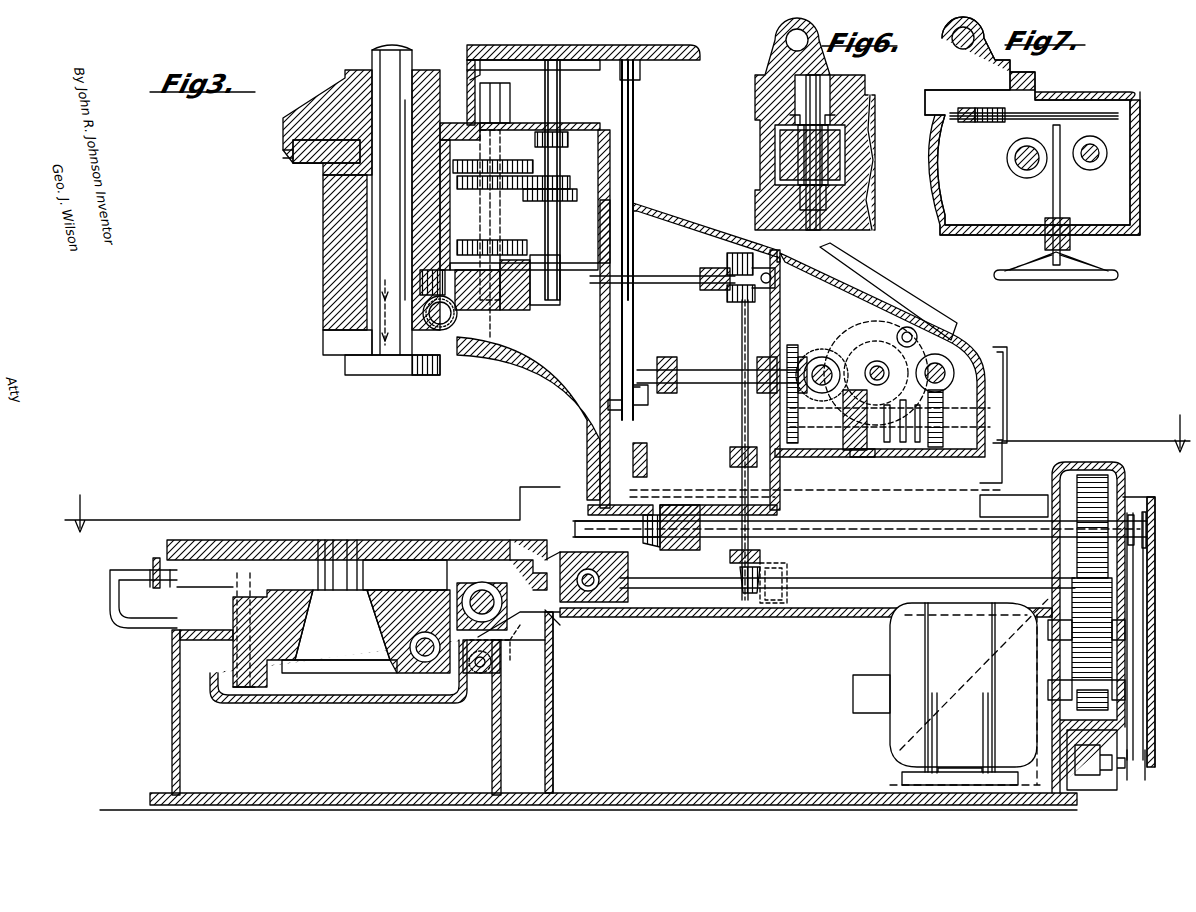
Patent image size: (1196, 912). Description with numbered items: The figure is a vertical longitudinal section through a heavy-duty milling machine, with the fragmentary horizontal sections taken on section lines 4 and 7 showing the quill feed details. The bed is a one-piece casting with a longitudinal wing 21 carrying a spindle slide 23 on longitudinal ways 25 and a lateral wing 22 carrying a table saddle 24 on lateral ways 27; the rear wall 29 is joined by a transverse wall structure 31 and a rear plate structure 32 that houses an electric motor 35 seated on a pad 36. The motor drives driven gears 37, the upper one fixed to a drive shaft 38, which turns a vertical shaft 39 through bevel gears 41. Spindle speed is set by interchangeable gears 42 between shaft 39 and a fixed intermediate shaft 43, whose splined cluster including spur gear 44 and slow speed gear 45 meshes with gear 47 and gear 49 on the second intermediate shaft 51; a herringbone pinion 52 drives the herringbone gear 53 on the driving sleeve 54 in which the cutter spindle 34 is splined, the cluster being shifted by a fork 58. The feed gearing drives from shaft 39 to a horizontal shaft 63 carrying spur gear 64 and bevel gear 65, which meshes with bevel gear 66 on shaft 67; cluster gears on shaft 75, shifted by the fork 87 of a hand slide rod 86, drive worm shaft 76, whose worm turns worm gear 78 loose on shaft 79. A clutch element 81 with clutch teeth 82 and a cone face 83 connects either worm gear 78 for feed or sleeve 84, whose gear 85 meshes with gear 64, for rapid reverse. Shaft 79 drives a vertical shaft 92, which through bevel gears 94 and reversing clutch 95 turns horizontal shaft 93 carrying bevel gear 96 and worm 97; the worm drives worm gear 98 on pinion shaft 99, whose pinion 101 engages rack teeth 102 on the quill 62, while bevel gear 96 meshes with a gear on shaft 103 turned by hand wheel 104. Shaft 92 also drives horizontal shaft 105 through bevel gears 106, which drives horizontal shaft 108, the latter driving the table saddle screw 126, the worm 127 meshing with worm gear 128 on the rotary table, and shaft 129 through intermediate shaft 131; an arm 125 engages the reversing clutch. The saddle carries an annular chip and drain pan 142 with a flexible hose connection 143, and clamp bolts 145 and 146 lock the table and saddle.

In FIG. 3, the section line 4- 4 is at (628, 473).
In FIG. 3, the section line 7- 7 is at (434, 311).
In FIG. 3, the longitudinal wing 21 is at (783, 805).
In FIG. 3, the lateral wing 22 is at (172, 718).
In FIG. 3, the spindle slide 23 is at (690, 215).
In FIG. 6, the spindle slide 23 is at (872, 228).
In FIG. 7, the spindle slide 23 is at (1110, 80).
In FIG. 3, the table saddle 24 is at (240, 664).
In FIG. 3, the longitudinal ways 25 is at (1013, 498).
In FIG. 3, the lateral ways 27 is at (495, 655).
In FIG. 3, the rear wall 29 is at (798, 700).
In FIG. 3, the transverse wall structure 31 is at (560, 624).
In FIG. 3, the rear plate structure 32 is at (1090, 455).
In FIG. 3, the cutter spindle 34 is at (400, 375).
In FIG. 3, the electric motor 35 is at (907, 650).
In FIG. 3, the pad 36 is at (900, 783).
In FIG. 3, the driven gears 37 is at (1110, 585).
In FIG. 3, the drive shaft 38 is at (1020, 545).
In FIG. 3, the vertical shaft 39 is at (651, 300).
In FIG. 3, the bevel gears 41 is at (618, 522).
In FIG. 3, the interchangeable gears 42 is at (590, 70).
In FIG. 3, the intermediate shaft 43 is at (470, 215).
In FIG. 3, the spur gear 44 is at (540, 172).
In FIG. 3, the slow speed gear 45 is at (578, 192).
In FIG. 3, the gear 47 is at (455, 205).
In FIG. 3, the gear 49 is at (505, 230).
In FIG. 3, the second intermediate shaft 51 is at (494, 78).
In FIG. 7, the second intermediate shaft 51 is at (1015, 175).
In FIG. 3, the herringbone pinion 52 is at (485, 120).
In FIG. 3, the herringbone gear 53 is at (290, 150).
In FIG. 3, the driving sleeve 54 is at (360, 85).
In FIG. 3, the fork 58 is at (615, 150).
In FIG. 3, the quill 62 is at (355, 315).
In FIG. 3, the horizontal shaft 63 is at (705, 383).
In FIG. 3, the spur gear 64 is at (792, 345).
In FIG. 3, the bevel gear 65 is at (815, 358).
In FIG. 3, the bevel gear 66 is at (836, 350).
In FIG. 3, the shaft 67 is at (868, 342).
In FIG. 3, the shaft 75 is at (880, 386).
In FIG. 3, the worm shaft 76 is at (948, 365).
In FIG. 3, the worm gear 78 is at (948, 438).
In FIG. 3, the shaft 79 is at (990, 398).
In FIG. 3, the clutch element 81 is at (886, 429).
In FIG. 3, the clutch teeth 82 is at (910, 426).
In FIG. 3, the cone face 83 is at (868, 463).
In FIG. 3, the sleeve 84 is at (828, 450).
In FIG. 3, the gear 85 is at (781, 458).
In FIG. 3, the hand slide rod 86 is at (915, 330).
In FIG. 3, the fork 87 is at (880, 342).
In FIG. 3, the vertical shaft 92 is at (742, 326).
In FIG. 3, the horizontal shaft 93 is at (655, 278).
In FIG. 7, the horizontal shaft 93 is at (1100, 118).
In FIG. 3, the bevel gears 94 is at (727, 295).
In FIG. 3, the reversing clutch 95 is at (728, 265).
In FIG. 3, the bevel gear 96 is at (520, 240).
In FIG. 7, the bevel gear 96 is at (1055, 112).
In FIG. 3, the worm 97 is at (445, 265).
In FIG. 7, the worm 97 is at (960, 122).
In FIG. 6, the worm gear 98 is at (830, 110).
In FIG. 3, the pinion shaft 99 is at (462, 322).
In FIG. 6, the pinion shaft 99 is at (826, 195).
In FIG. 3, the pinion 101 is at (450, 318).
In FIG. 6, the pinion 101 is at (830, 150).
In FIG. 3, the rack teeth 102 is at (455, 350).
In FIG. 7, the shaft 103 is at (1062, 192).
In FIG. 7, the hand wheel 104 is at (1110, 256).
In FIG. 3, the horizontal shaft 105 is at (840, 585).
In FIG. 3, the bevel gears 106 is at (742, 598).
In FIG. 3, the horizontal shaft 108 is at (575, 555).
In FIG. 3, the arm 125 is at (339, 631).
In FIG. 3, the table saddle screw 126 is at (422, 660).
In FIG. 3, the worm 127 is at (502, 603).
In FIG. 3, the worm gear 128 is at (235, 600).
In FIG. 3, the shaft 129 is at (480, 673).
In FIG. 3, the intermediate shaft 131 is at (507, 644).
In FIG. 3, the chip and drain pan 142 is at (110, 596).
In FIG. 3, the flexible hose connection 143 is at (560, 210).
In FIG. 7, the flexible hose connection 143 is at (1098, 155).
In FIG. 3, the clamp bolt 145 is at (153, 558).
In FIG. 3, the clamp bolt 146 is at (252, 577).